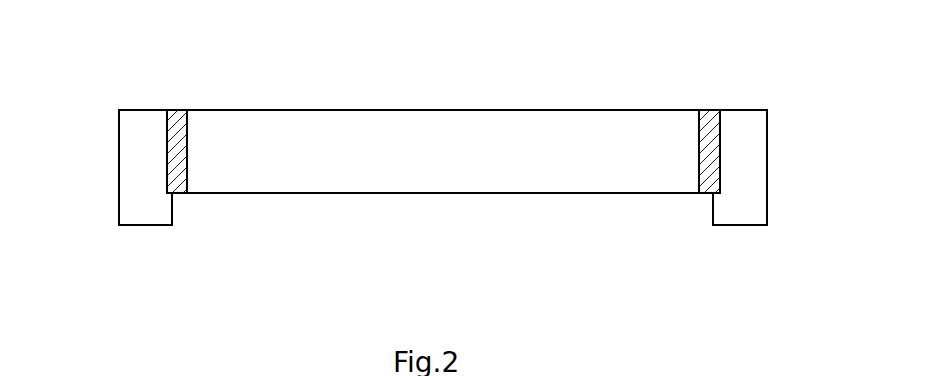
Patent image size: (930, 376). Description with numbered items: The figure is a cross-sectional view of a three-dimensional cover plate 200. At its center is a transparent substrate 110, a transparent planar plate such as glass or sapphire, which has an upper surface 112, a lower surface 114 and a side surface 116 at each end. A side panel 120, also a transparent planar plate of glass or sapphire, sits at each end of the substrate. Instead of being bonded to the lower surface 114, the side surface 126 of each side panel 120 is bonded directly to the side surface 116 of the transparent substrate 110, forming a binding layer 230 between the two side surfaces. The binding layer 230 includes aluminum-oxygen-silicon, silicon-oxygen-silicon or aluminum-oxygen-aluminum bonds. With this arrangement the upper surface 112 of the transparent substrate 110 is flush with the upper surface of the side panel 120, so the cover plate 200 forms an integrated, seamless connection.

The three-dimensional cover plate 200 is at (129, 37).
The transparent substrate 110 is at (442, 175).
The upper surface 112 is at (362, 110).
The lower surface 114 is at (315, 193).
The side surface 116 is at (188, 140).
The side panel 120 is at (140, 210).
The side surface 126 is at (166, 143).
The binding layer 230 is at (166, 168).